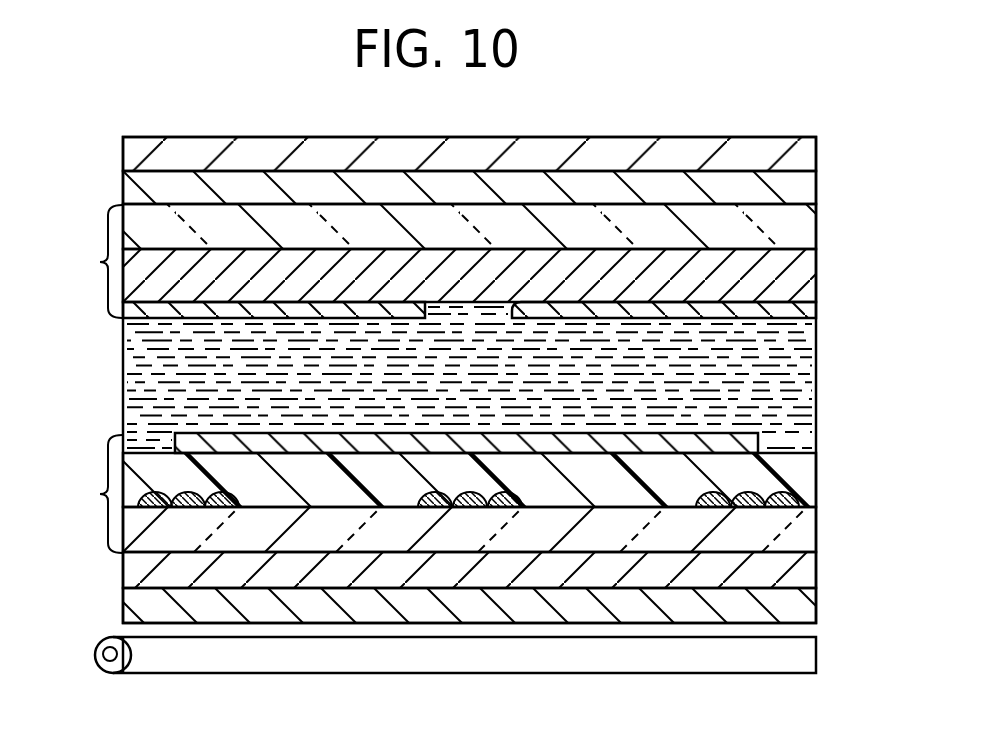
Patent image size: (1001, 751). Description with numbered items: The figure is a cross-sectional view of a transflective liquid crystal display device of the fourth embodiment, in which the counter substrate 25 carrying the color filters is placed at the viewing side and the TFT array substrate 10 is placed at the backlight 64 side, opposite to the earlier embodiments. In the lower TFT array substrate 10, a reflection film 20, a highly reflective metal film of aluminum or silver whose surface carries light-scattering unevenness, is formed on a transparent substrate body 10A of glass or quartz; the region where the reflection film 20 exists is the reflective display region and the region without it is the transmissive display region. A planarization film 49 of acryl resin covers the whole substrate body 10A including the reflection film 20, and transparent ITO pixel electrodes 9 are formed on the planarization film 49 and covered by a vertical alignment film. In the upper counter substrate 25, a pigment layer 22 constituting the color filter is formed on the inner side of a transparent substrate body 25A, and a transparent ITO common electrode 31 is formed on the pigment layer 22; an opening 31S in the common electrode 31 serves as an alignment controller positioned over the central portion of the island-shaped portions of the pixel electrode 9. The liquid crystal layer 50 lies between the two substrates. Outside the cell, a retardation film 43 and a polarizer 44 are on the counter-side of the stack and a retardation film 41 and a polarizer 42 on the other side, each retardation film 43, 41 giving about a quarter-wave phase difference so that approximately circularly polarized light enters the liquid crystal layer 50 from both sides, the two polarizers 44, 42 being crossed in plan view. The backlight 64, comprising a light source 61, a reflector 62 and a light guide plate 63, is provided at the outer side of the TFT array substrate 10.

The polarizer 44 is at (810, 152).
The retardation film 43 is at (810, 183).
The substrate body 25A is at (810, 228).
The pigment layer 22 is at (810, 263).
The common electrode 31 is at (810, 310).
The opening 31S is at (507, 306).
The counter substrate 25 is at (95, 261).
The liquid crystal layer 50 is at (810, 370).
The pixel electrode 9 is at (760, 443).
The planarization film 49 is at (807, 473).
The reflection film 20 is at (190, 507).
The TFT array substrate 10 is at (96, 494).
The substrate body 10A is at (810, 522).
The retardation film 41 is at (810, 563).
The polarizer 42 is at (810, 600).
The backlight 64 is at (80, 616).
The light guide plate 63 is at (810, 650).
The reflector 62 is at (97, 667).
The light source 61 is at (106, 668).